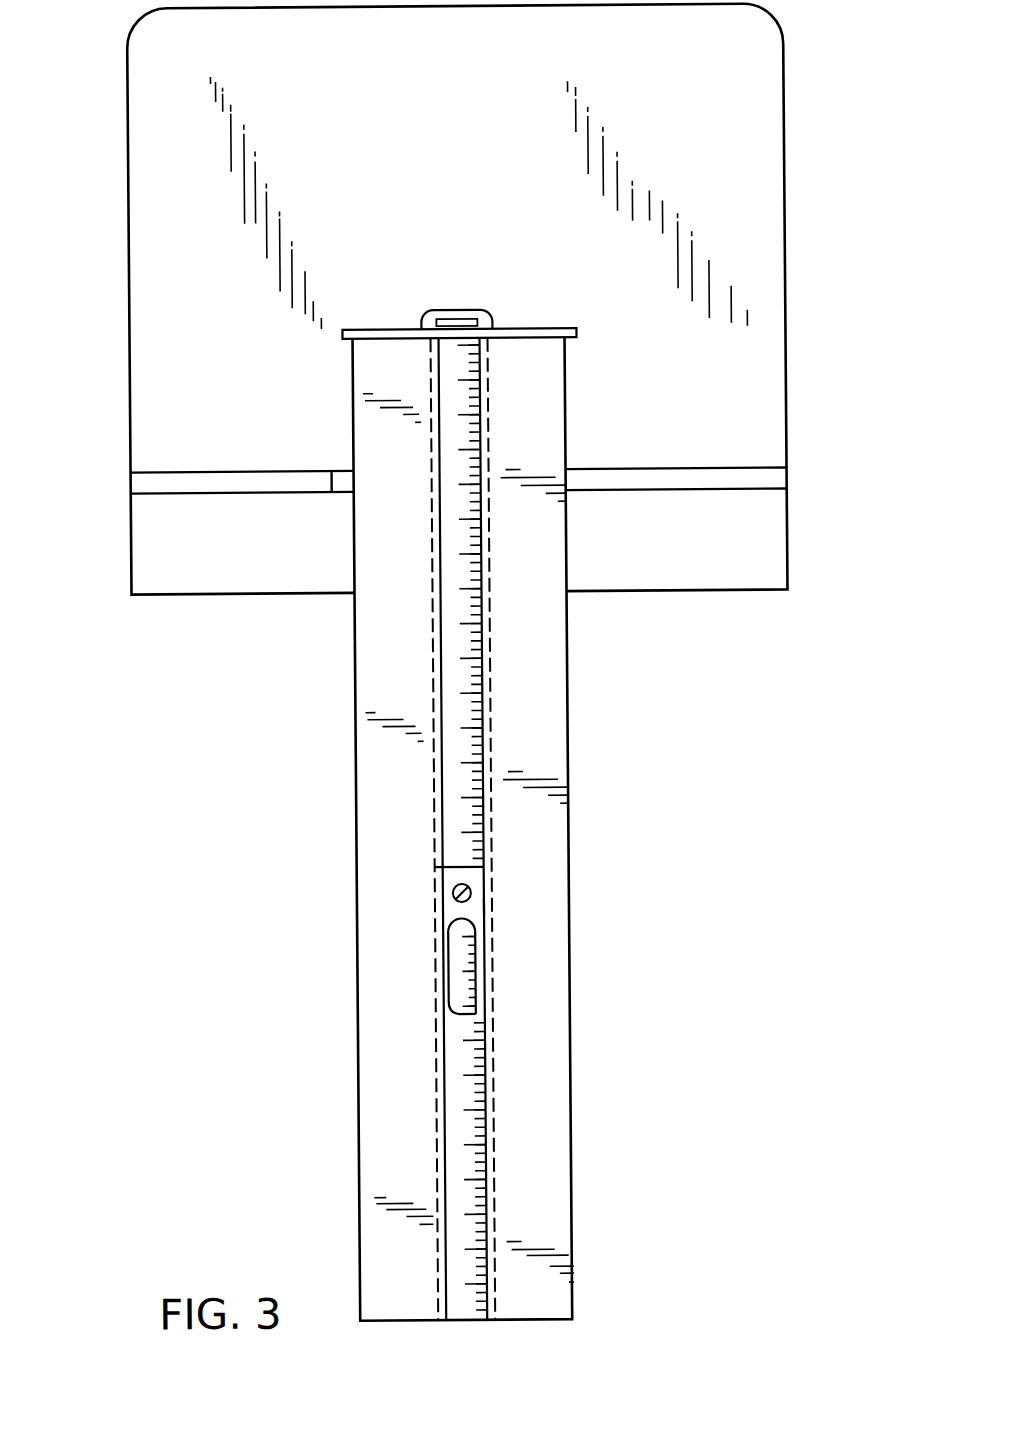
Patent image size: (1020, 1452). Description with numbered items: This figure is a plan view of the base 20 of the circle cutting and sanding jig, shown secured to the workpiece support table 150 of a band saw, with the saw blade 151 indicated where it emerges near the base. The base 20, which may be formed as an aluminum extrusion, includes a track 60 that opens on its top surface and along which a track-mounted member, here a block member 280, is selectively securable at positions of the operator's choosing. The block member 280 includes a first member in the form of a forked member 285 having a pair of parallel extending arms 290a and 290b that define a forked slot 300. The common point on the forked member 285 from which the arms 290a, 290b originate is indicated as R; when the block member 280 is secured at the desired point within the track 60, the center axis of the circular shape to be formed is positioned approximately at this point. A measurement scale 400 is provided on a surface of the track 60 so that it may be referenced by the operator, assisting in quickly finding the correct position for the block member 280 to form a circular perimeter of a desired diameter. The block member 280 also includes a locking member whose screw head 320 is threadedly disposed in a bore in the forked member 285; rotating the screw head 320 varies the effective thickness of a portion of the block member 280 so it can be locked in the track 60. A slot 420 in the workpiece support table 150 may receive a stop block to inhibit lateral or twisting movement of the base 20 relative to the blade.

The workpiece support table 150 is at (731, 170).
The saw blade 151 is at (468, 313).
The slot 420 is at (120, 373).
The measurement scale 400 is at (483, 708).
The base 20 is at (306, 831).
The forked member 285 is at (484, 872).
The screw head 320 is at (448, 893).
The block member 280 is at (474, 907).
The common point R is at (447, 922).
The arm 290a is at (437, 992).
The arm 290b is at (484, 992).
The forked slot 300 is at (470, 1012).
The track 60 is at (462, 1072).